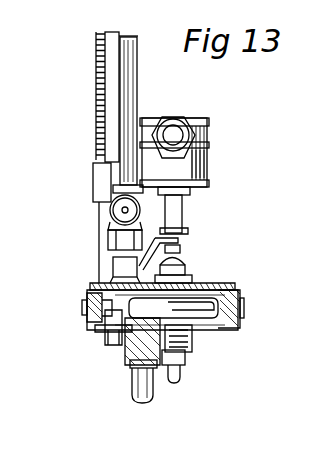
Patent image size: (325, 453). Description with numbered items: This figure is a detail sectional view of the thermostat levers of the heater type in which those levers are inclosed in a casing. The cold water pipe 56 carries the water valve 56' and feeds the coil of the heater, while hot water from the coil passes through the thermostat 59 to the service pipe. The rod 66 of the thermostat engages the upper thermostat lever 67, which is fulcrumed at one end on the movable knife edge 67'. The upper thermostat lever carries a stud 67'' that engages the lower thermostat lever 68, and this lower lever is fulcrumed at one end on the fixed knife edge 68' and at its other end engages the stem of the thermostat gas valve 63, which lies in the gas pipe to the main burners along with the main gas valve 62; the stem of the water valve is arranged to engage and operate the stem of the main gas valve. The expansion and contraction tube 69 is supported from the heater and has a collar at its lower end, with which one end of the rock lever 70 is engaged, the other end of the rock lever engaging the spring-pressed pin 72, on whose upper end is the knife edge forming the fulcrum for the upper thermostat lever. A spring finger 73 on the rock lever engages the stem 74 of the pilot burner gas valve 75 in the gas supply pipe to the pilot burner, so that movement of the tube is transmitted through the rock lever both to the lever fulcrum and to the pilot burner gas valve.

The expansion and contraction tube 69 is at (97, 110).
The thermostat 59 is at (140, 92).
The cold water pipe 56 is at (196, 152).
The water valve 56' is at (221, 164).
The spring finger 73 is at (140, 268).
The stem 74 is at (178, 240).
The rock lever 70 is at (181, 247).
The pilot burner gas valve 75 is at (175, 307).
The upper thermostat lever 67 is at (198, 273).
The lower thermostat lever 68 is at (167, 290).
The rod 66 is at (90, 300).
The movable knife edge 67' is at (81, 318).
The fixed knife edge 68' is at (243, 309).
The spring-pressed pin 72 is at (112, 337).
The thermostat gas valve 63 is at (128, 343).
The stud 67'' is at (203, 344).
The main gas valve 62 is at (188, 353).